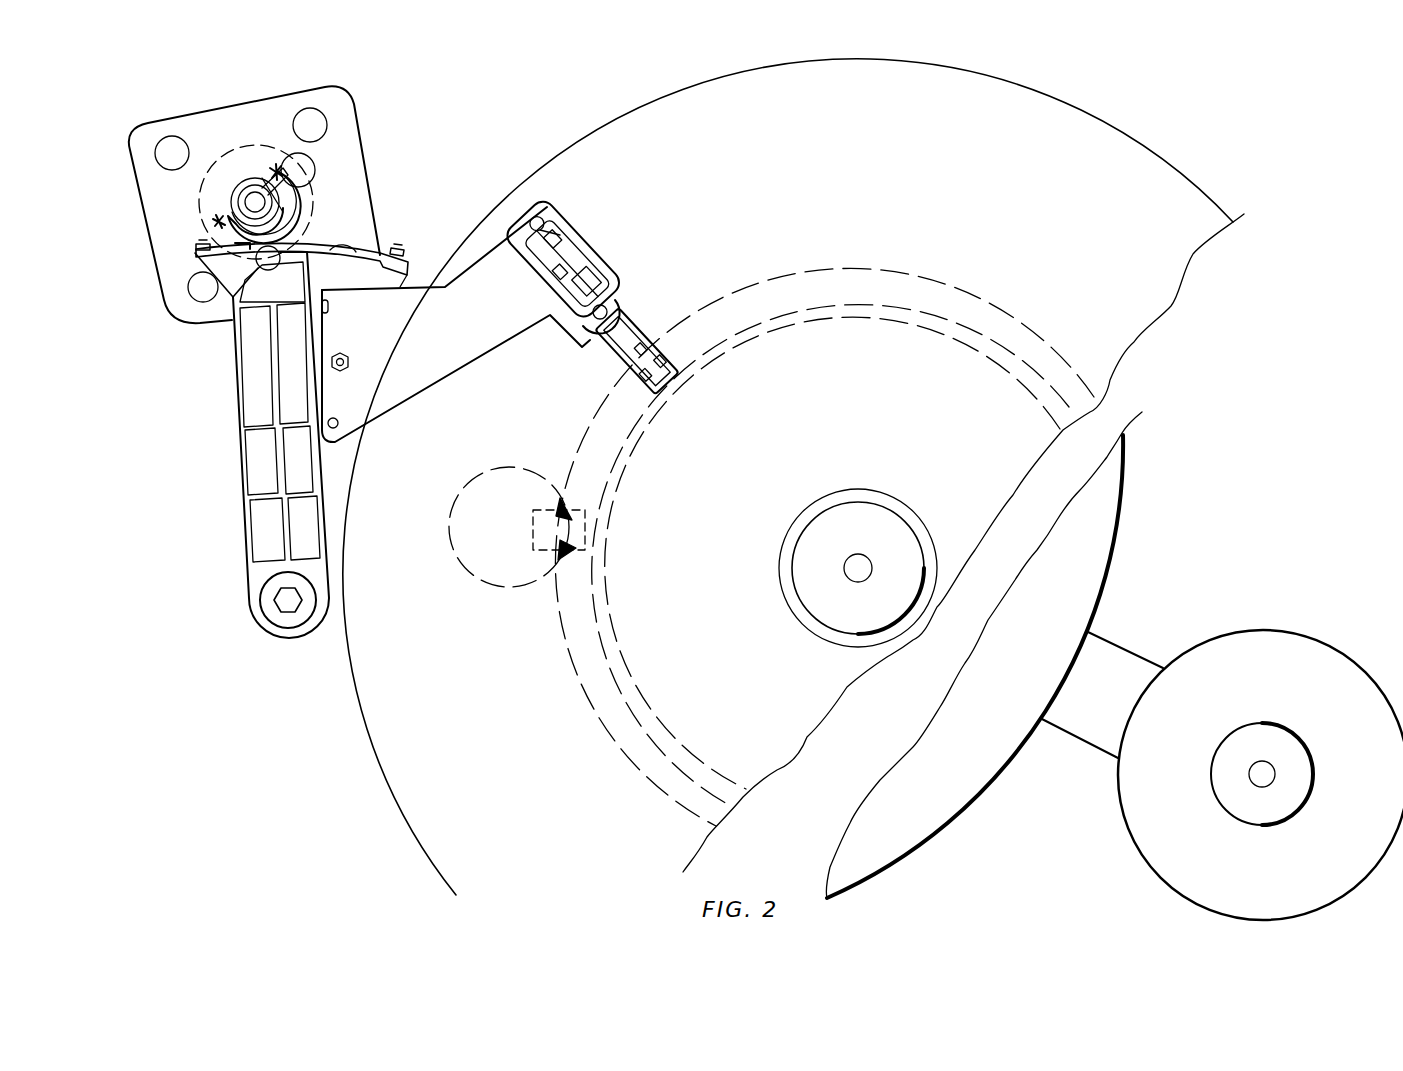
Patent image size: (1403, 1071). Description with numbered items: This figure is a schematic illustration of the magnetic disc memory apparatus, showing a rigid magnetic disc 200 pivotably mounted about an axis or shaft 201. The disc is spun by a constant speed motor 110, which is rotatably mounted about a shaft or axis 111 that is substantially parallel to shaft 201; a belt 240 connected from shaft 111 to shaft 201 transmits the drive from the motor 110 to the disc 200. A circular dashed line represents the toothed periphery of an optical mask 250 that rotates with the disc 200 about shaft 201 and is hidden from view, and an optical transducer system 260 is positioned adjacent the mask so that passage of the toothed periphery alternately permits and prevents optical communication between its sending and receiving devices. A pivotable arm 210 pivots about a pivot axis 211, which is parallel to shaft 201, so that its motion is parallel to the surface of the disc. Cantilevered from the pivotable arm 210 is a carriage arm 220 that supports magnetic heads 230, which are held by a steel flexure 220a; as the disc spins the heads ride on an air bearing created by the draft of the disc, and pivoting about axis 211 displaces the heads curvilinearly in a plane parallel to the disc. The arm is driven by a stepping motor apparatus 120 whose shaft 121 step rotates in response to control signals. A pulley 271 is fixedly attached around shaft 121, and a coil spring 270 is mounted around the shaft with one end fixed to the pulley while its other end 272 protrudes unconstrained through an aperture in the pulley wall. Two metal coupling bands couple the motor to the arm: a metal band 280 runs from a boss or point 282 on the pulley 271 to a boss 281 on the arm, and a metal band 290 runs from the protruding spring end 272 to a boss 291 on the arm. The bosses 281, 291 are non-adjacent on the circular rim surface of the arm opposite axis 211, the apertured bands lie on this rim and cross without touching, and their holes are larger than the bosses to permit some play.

The constant speed motor 110 is at (1318, 640).
The shaft or axis 111 is at (1258, 773).
The stepping motor apparatus 120 is at (237, 98).
The shaft 121 is at (252, 197).
The magnetic disc 200 is at (1205, 193).
The axis or shaft 201 is at (860, 566).
The pivotable arm 210 is at (238, 456).
The pivot axis 211 is at (284, 602).
The carriage arm 220 is at (513, 212).
The flexure 220a is at (515, 225).
The magnetic heads 230 is at (647, 350).
The belt 240 is at (1128, 648).
The optical mask 250 is at (1019, 324).
The optical transducer system 260 is at (472, 572).
The coil spring 270 is at (224, 192).
The pulley 271 is at (293, 203).
The other end of spring 272 is at (215, 221).
The metal band 280 is at (243, 246).
The boss 281 is at (200, 247).
The boss or point 282 is at (276, 168).
The metal band 290 is at (300, 232).
The boss 291 is at (399, 250).